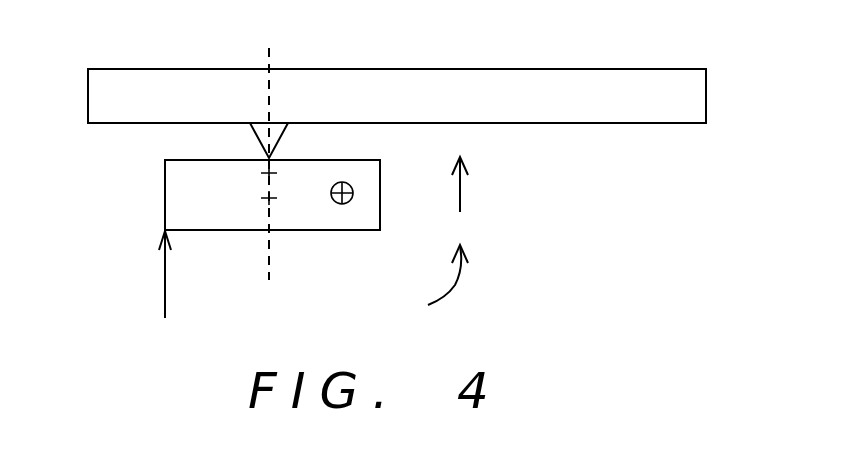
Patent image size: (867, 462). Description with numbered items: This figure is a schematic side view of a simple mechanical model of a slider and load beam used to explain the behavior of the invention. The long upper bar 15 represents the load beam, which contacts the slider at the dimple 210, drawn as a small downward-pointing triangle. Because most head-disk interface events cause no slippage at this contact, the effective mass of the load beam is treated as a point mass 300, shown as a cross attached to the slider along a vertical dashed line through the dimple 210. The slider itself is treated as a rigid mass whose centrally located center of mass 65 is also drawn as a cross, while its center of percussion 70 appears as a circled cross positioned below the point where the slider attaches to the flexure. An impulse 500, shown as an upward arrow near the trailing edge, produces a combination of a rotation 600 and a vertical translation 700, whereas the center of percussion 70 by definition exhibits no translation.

The substrate / wafer 15 is at (644, 86).
The dimple 210 is at (282, 141).
The point mass of load beam 300 is at (263, 178).
The center of mass 65 is at (273, 200).
The center of percussion 70 is at (343, 204).
The impulse 500 is at (165, 282).
The vertical translation 700 is at (462, 192).
The rotation 600 is at (423, 287).